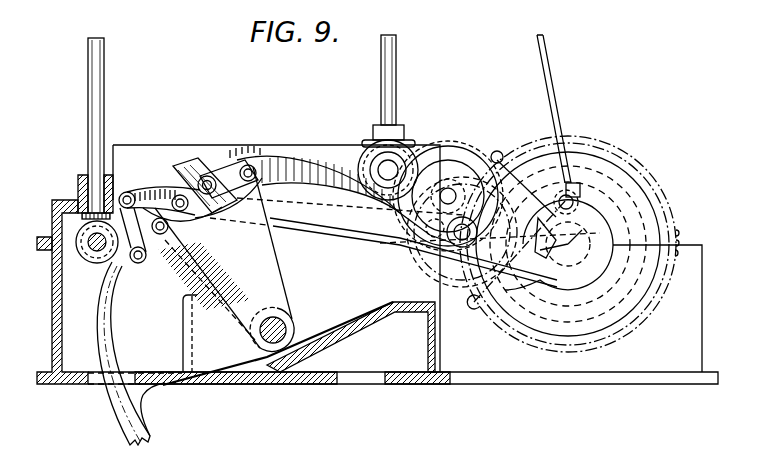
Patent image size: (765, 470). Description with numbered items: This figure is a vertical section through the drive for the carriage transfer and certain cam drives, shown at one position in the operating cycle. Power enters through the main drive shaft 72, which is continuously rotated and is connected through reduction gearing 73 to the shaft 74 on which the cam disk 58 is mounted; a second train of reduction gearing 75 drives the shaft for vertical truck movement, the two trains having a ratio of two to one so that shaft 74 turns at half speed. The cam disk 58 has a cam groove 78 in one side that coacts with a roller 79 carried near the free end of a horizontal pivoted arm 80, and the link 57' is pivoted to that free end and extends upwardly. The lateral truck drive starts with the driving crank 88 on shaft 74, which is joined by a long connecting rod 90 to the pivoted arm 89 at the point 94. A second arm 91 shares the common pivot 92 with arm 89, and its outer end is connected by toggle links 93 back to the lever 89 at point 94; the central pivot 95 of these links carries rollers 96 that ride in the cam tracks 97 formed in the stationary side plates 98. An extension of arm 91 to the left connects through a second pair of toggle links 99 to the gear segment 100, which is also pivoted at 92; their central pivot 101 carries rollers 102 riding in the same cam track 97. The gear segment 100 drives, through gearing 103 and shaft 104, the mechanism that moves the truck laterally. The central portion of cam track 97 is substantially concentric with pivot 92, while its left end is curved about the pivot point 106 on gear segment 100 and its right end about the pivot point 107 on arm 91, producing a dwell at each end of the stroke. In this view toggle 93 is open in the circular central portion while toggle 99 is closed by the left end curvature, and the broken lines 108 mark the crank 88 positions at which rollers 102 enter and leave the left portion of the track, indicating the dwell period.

The shaft 104 is at (90, 82).
The gearing 103 is at (82, 258).
The gear segment 100 is at (92, 333).
The central pivot 101 is at (127, 190).
The rollers 102 is at (135, 205).
The pivot point 106 is at (137, 263).
The second pair of toggle links 99 is at (155, 190).
The pivoted arm 89 is at (215, 222).
The point 94 is at (183, 176).
The central pivot 95 is at (209, 176).
The rollers 96 is at (240, 168).
The toggle links 93 is at (238, 198).
The pivot point 107 is at (250, 160).
The cam track 97 is at (300, 160).
The stationary side plates 98 is at (337, 145).
The second arm 91 is at (278, 255).
The pivot 92 is at (283, 328).
The connecting rod 90 is at (350, 243).
The main drive shaft 72 is at (396, 78).
The reduction gearing 73 is at (490, 135).
The horizontal pivoted arm 80 is at (517, 231).
The reduction gearing 75 is at (462, 298).
The driving crank 88 is at (527, 276).
The cam disk 58 is at (636, 176).
The cam groove 78 is at (646, 210).
The shaft 74 is at (586, 264).
The broken lines 108 is at (568, 244).
The link 57' is at (559, 116).
The roller 79 is at (560, 196).